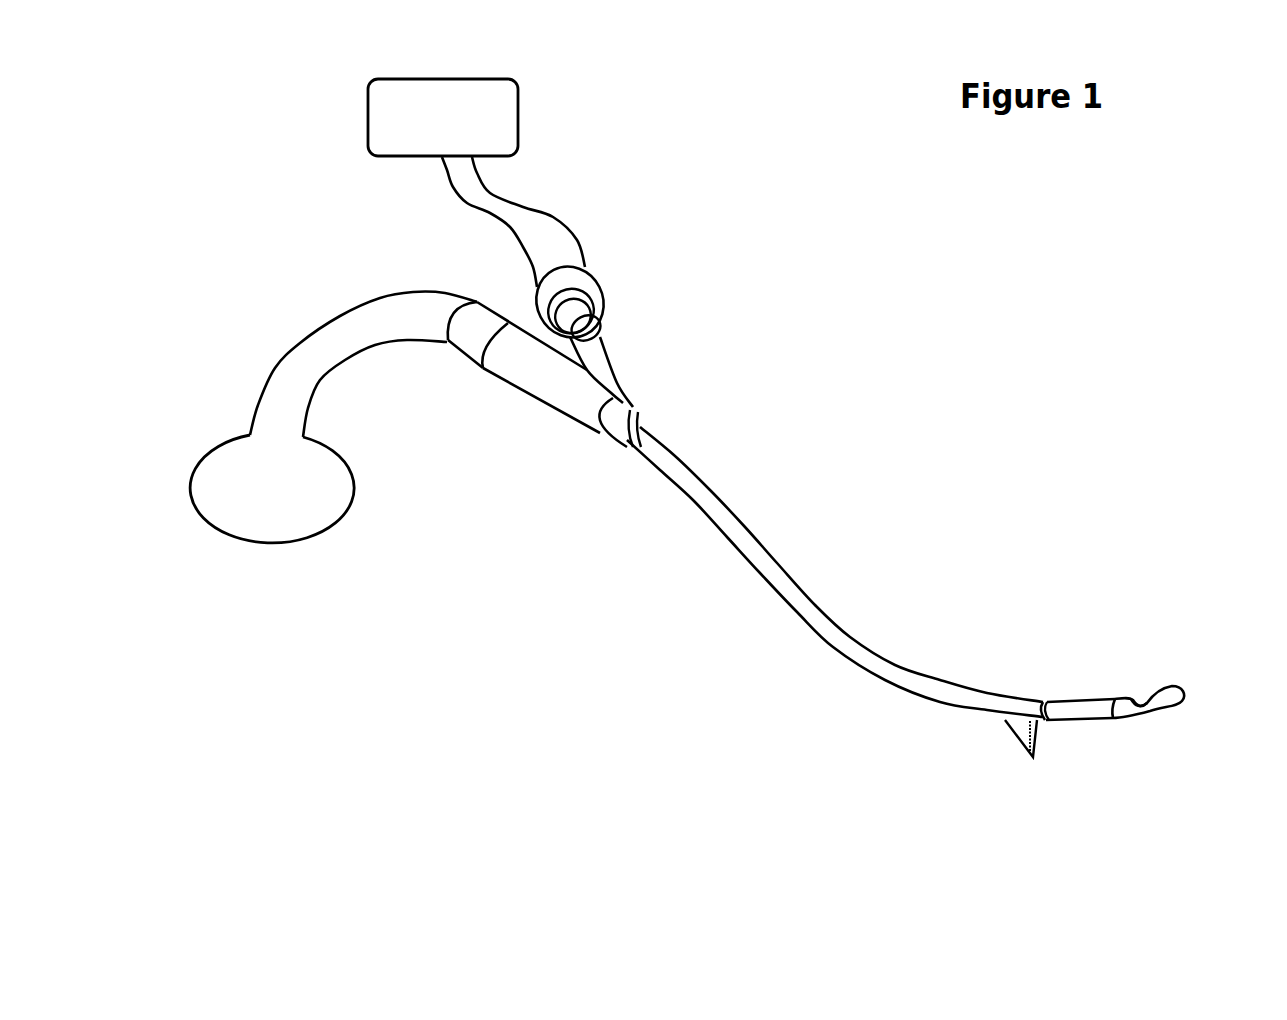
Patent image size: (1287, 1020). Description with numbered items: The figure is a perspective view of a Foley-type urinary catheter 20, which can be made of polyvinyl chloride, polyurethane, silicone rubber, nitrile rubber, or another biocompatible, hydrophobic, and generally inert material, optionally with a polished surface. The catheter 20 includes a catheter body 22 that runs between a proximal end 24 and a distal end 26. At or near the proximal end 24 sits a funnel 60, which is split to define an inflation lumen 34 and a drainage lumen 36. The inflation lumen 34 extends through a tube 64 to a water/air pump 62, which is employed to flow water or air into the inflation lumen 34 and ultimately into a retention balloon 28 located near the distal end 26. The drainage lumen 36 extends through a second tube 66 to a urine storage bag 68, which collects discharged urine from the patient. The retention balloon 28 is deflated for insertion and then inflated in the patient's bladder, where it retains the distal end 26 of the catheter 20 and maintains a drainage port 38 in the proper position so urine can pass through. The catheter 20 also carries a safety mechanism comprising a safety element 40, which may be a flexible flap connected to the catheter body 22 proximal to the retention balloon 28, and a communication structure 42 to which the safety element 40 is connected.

The catheter 20 is at (931, 340).
The catheter body 22 is at (780, 562).
The proximal end 24 is at (625, 312).
The distal end 26 is at (1185, 678).
The retention balloon 28 is at (1070, 700).
The inflation lumen 34 is at (603, 363).
The drainage lumen 36 is at (508, 360).
The drainage port 38 is at (1135, 692).
The safety element 40 is at (1040, 733).
The communication structure 42 is at (1027, 745).
The funnel 60 is at (568, 418).
The water/air pump 62 is at (368, 110).
The tube 64 is at (553, 207).
The tube 66 is at (318, 322).
The urine storage bag 68 is at (260, 547).